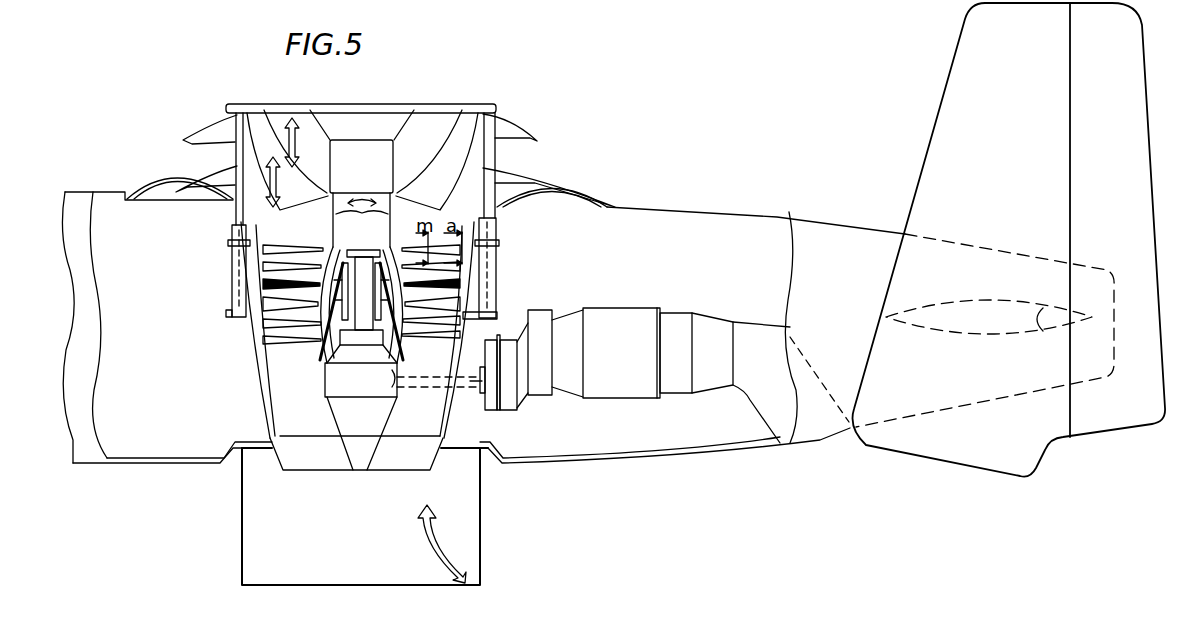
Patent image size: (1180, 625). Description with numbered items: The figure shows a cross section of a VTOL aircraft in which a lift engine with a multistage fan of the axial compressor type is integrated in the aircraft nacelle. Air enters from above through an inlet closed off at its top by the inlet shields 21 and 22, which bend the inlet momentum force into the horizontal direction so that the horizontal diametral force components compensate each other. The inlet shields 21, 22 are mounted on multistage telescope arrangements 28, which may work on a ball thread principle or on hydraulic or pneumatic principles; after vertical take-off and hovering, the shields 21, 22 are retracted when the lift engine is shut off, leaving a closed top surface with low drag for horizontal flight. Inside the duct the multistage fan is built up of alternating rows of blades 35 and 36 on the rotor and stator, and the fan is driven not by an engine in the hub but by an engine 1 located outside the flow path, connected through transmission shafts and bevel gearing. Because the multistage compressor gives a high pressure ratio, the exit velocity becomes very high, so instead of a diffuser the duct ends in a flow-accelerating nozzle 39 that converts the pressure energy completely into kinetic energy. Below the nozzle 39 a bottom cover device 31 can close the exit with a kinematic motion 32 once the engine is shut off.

The gas turbine engine 1 is at (629, 386).
The inlet shield 21 is at (440, 101).
The inlet shield 22 is at (535, 142).
The multistage telescope arrangement 28 is at (497, 260).
The bottom cover device 31 is at (467, 533).
The kinematic motion 32 is at (434, 527).
The stator vanes 35 is at (288, 244).
The rotor blades 36 is at (266, 266).
The flow-accelerating nozzle 39 is at (450, 410).